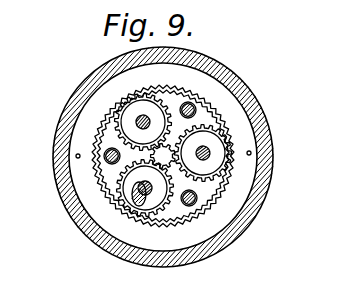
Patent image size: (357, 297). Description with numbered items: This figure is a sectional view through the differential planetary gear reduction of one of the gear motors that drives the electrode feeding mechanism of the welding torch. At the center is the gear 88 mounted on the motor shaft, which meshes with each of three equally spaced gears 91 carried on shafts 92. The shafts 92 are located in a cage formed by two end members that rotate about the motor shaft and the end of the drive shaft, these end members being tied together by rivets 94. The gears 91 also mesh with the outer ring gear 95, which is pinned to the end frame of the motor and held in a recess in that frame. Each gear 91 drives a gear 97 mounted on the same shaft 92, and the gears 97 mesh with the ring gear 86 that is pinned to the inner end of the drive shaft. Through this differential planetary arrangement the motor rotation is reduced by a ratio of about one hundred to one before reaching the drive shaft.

The ring gear 95 is at (220, 90).
The ring gear 86 is at (212, 109).
The gears 91 is at (213, 190).
The gear 88 is at (163, 152).
The shafts 92 is at (204, 153).
The rivets 94 is at (181, 210).
The gear 97 is at (124, 183).